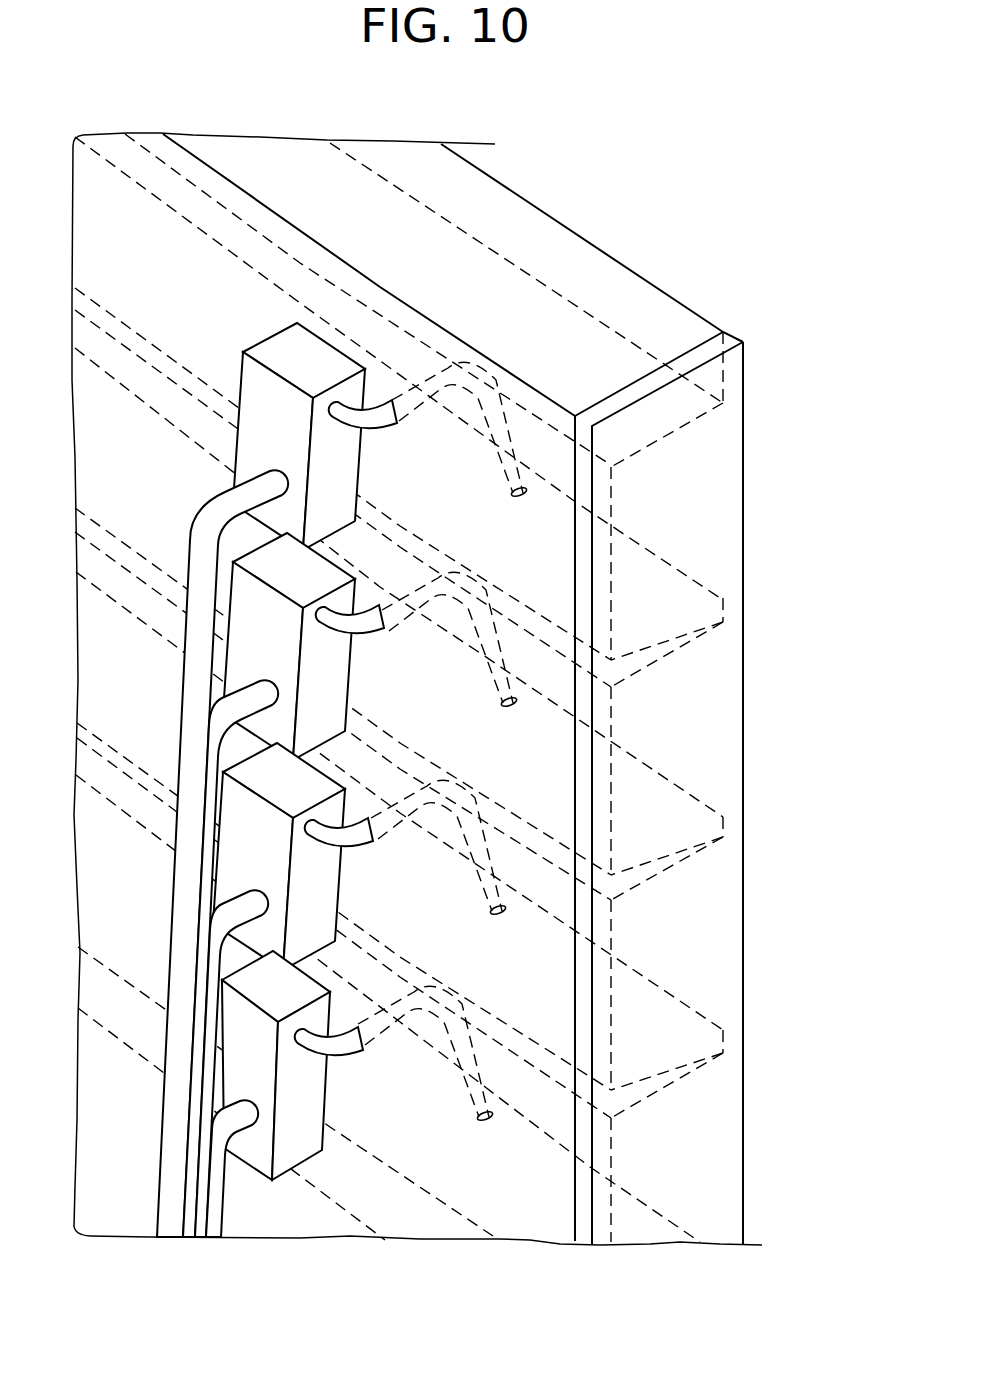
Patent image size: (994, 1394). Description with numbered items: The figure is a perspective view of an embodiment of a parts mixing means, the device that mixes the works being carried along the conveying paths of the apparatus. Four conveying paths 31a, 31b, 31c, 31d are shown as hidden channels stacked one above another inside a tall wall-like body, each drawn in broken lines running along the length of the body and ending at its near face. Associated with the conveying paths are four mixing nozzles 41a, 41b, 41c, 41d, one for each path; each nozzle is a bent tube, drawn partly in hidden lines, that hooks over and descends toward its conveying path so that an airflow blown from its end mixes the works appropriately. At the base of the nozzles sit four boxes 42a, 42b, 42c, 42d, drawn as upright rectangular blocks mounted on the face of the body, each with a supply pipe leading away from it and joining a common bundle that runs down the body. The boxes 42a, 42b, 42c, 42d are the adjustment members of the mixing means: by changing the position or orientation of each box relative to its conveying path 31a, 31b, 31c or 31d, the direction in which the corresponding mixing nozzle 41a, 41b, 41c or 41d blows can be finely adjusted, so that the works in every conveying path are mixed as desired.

The conveying path 31a is at (680, 1137).
The conveying path 31b is at (688, 937).
The conveying path 31c is at (695, 720).
The conveying path 31d is at (697, 492).
The mixing nozzle 41a is at (444, 1070).
The mixing nozzle 41b is at (461, 858).
The mixing nozzle 41c is at (483, 656).
The mixing nozzle 41d is at (485, 438).
The box 42a is at (328, 1083).
The box 42b is at (338, 878).
The box 42c is at (348, 668).
The box 42d is at (243, 351).